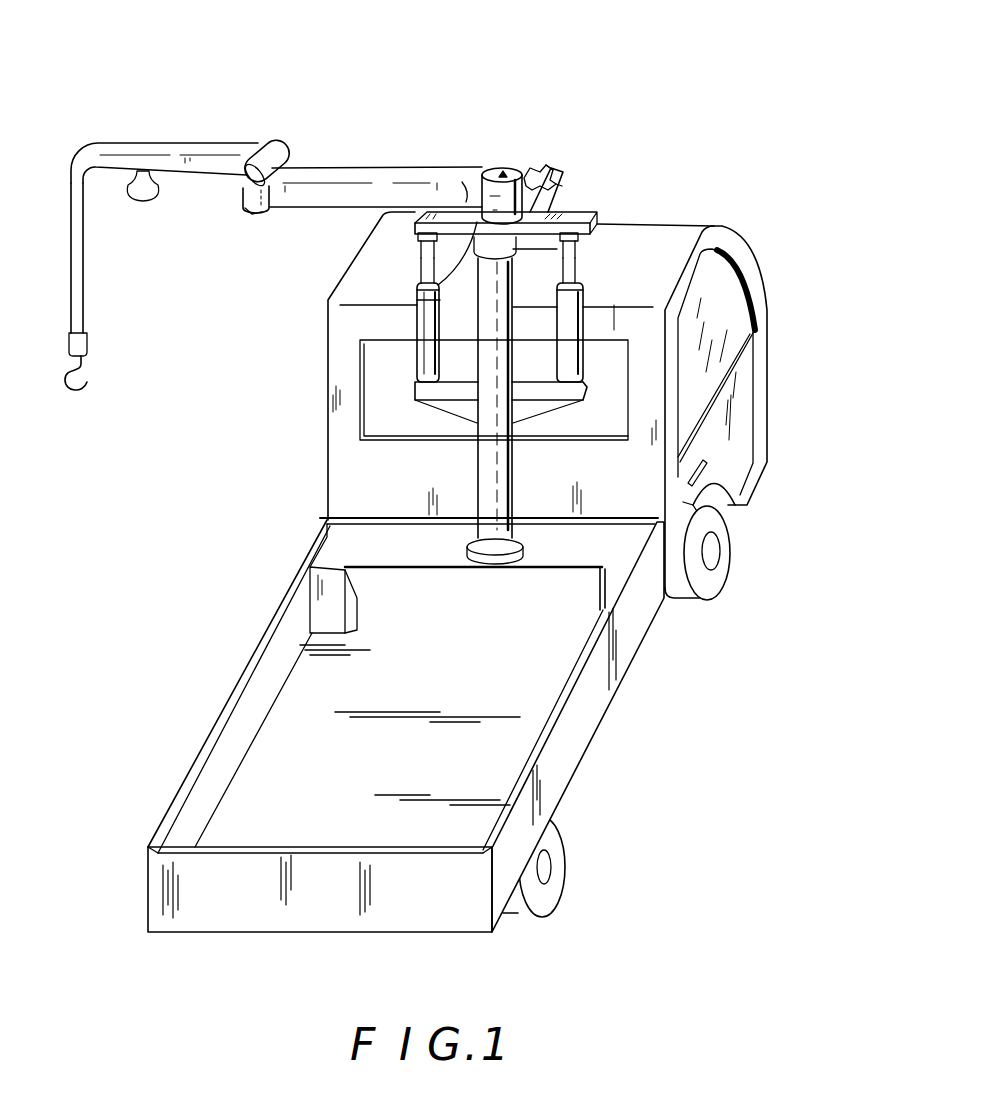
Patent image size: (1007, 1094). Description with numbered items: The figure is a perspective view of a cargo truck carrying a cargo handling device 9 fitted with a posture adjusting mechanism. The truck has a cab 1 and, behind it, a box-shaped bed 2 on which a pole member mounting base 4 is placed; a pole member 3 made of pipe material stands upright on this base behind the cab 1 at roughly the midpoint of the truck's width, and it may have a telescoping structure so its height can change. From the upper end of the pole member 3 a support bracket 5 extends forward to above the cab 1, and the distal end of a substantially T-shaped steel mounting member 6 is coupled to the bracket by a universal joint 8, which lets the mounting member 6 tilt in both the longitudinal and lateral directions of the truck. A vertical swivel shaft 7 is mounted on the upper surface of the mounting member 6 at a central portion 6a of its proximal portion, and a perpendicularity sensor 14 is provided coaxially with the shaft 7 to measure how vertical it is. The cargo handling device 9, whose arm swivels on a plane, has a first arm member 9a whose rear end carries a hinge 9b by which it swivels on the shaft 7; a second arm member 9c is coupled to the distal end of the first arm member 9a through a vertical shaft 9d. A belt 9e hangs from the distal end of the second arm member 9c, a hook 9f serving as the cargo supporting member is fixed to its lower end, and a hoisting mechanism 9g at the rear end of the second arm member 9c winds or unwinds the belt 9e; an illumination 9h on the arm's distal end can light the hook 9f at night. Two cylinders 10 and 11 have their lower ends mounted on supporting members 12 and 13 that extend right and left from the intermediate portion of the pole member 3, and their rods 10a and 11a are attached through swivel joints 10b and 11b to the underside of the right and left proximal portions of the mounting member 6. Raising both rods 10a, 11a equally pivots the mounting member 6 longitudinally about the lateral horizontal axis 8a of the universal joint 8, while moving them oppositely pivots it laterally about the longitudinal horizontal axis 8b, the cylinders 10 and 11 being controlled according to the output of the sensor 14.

The cab 1 is at (745, 208).
The box-shaped bed 2 is at (230, 712).
The pole member 3 is at (483, 465).
The pole member mounting base 4 is at (348, 549).
The support bracket 5 is at (547, 196).
The mounting member 6 is at (672, 226).
The central portion of the proximal portion of the mounting member 6a is at (420, 303).
The swivel shaft 7 is at (453, 175).
The universal joint 8 is at (561, 154).
The horizontal axis of the universal joint (lateral) 8a is at (560, 185).
The horizontal axis of the universal joint (longitudinal) 8b is at (536, 163).
The cargo handling device 9 is at (304, 201).
The first arm member 9a is at (363, 166).
The hinge 9b is at (484, 180).
The second arm member 9c is at (197, 142).
The vertical shaft 9d is at (245, 203).
The belt 9e is at (84, 300).
The hook 9f is at (89, 375).
The hoisting mechanism 9g is at (296, 130).
The illumination 9h is at (148, 201).
The cylinder 10 is at (420, 360).
The rod 10a is at (420, 272).
The swivel joint 10b is at (420, 240).
The cylinder 11 is at (585, 322).
The rod 11a is at (585, 273).
The swivel joint 11b is at (576, 250).
The supporting member 12 is at (443, 400).
The supporting member 13 is at (540, 400).
The perpendicularity sensor 14 is at (504, 172).